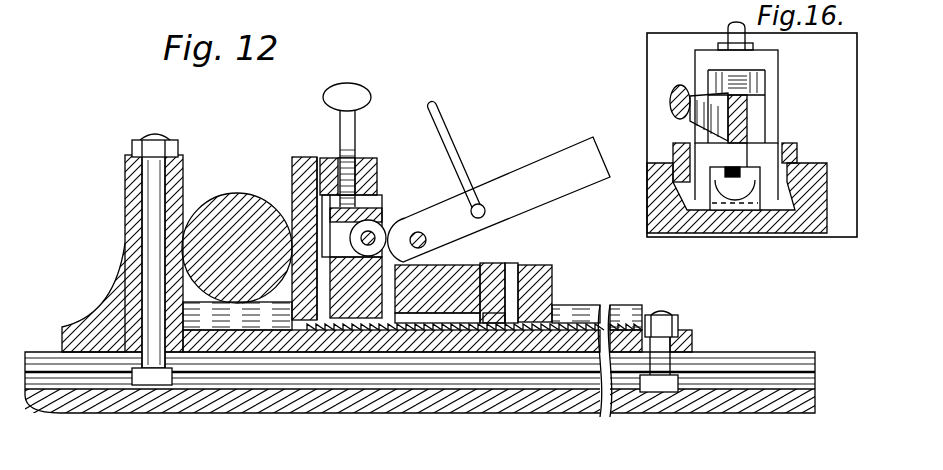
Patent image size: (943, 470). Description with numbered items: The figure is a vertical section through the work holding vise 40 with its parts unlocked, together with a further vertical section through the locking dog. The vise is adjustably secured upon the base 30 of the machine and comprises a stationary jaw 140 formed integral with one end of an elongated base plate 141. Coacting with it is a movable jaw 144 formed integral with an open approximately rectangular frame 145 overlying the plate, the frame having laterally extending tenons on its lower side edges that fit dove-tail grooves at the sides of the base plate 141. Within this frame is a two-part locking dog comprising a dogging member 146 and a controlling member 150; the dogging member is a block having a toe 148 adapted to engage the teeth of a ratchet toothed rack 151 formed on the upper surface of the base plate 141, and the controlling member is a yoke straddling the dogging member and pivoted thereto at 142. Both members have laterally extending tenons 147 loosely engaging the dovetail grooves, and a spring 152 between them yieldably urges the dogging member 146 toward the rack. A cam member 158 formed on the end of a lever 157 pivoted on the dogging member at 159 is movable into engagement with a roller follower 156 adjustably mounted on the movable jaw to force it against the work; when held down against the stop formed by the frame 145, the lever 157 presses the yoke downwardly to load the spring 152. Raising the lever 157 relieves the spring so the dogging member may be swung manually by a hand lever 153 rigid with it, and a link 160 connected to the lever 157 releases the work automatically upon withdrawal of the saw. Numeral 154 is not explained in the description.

In FIG. 12, the base 30 is at (582, 410).
In FIG. 12, the work holding vise 40 is at (90, 258).
In FIG. 12, the stationary jaw 140 is at (125, 190).
In FIG. 12, the base plate 141 is at (237, 343).
In FIG. 16, the base plate 141 is at (762, 228).
In FIG. 12, the pivot 142 is at (455, 290).
In FIG. 12, the movable jaw 144 is at (295, 170).
In FIG. 16, the movable jaw 144 is at (657, 60).
In FIG. 12, the frame 145 is at (553, 300).
In FIG. 16, the frame 145 is at (673, 140).
In FIG. 12, the dogging member 146 is at (410, 226).
In FIG. 16, the dogging member 146 is at (757, 127).
In FIG. 12, the tenons 147 is at (412, 318).
In FIG. 16, the tenons 147 is at (787, 212).
In FIG. 12, the toe 148 is at (495, 330).
In FIG. 16, the toe 148 is at (730, 200).
In FIG. 12, the controlling member 150 is at (507, 270).
In FIG. 16, the controlling member 150 is at (763, 153).
In FIG. 12, the ratchet toothed rack 151 is at (600, 308).
In FIG. 12, the spring 152 is at (512, 300).
In FIG. 16, the spring 152 is at (747, 173).
In FIG. 16, the hand lever 153 is at (672, 92).
In FIG. 12, the lower block 154 is at (347, 303).
In FIG. 12, the roller follower 156 is at (350, 232).
In FIG. 12, the lever 157 is at (552, 160).
In FIG. 16, the lever 157 is at (743, 110).
In FIG. 12, the cam member 158 is at (372, 222).
In FIG. 12, the pivot 159 is at (480, 203).
In FIG. 12, the link 160 is at (445, 118).